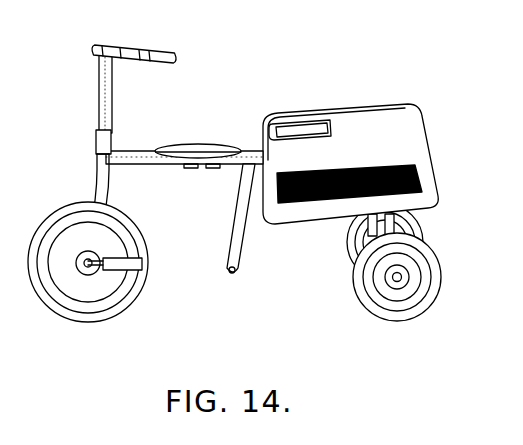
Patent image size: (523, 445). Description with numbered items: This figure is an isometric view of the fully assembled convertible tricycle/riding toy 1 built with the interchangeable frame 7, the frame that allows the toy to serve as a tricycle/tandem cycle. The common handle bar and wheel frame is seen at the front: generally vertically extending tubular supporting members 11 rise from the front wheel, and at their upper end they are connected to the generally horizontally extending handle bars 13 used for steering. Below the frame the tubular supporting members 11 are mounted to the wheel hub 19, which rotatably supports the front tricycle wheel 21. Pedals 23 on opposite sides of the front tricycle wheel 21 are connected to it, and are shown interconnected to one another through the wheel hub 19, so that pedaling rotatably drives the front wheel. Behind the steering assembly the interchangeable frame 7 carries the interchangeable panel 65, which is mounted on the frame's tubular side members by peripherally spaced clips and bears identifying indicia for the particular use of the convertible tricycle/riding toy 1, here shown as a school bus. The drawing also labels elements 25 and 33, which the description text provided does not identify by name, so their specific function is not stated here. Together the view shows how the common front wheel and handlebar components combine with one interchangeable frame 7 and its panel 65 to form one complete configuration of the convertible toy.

The convertible tricycle/riding toy 1 is at (259, 199).
The interchangeable frame 7 is at (357, 186).
The vertically extending tubular supporting members 11 is at (97, 187).
The handle bars 13 is at (153, 63).
The wheel hub 19 is at (84, 275).
The front tricycle wheel 21 is at (97, 323).
The pedals 23 is at (141, 270).
The rear wheels 25 is at (425, 228).
The seat 33 is at (194, 148).
The interchangeable panel 65 is at (372, 137).